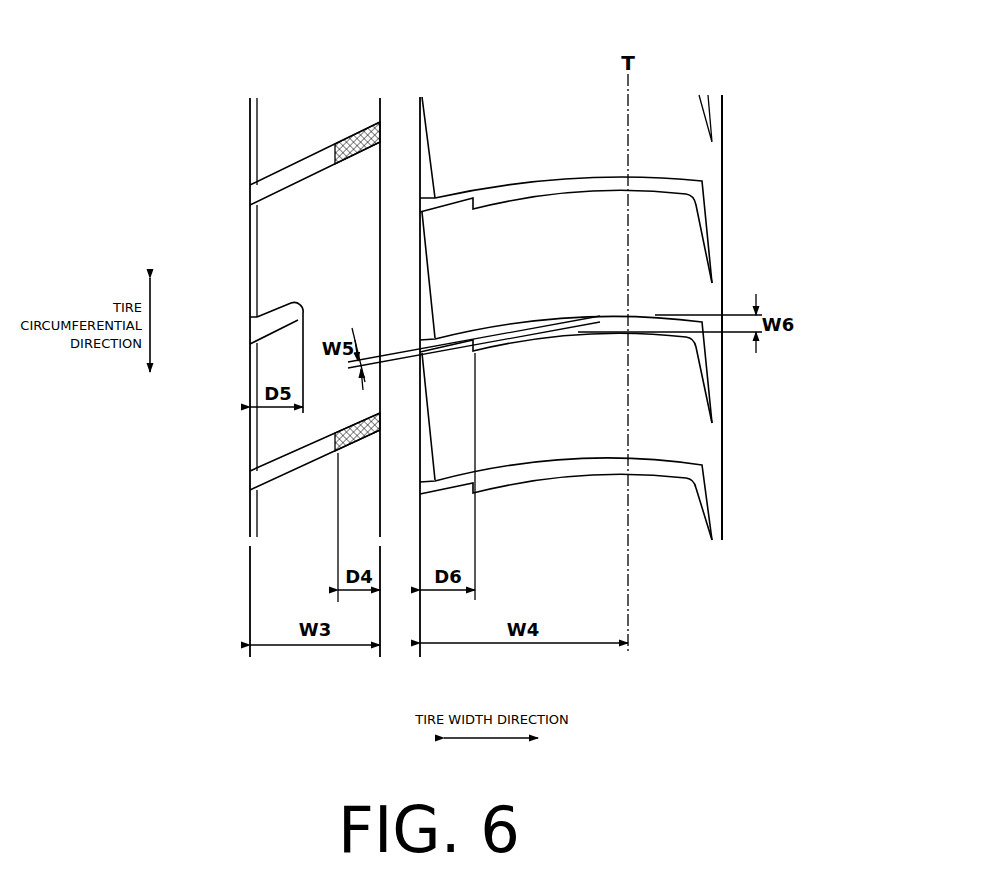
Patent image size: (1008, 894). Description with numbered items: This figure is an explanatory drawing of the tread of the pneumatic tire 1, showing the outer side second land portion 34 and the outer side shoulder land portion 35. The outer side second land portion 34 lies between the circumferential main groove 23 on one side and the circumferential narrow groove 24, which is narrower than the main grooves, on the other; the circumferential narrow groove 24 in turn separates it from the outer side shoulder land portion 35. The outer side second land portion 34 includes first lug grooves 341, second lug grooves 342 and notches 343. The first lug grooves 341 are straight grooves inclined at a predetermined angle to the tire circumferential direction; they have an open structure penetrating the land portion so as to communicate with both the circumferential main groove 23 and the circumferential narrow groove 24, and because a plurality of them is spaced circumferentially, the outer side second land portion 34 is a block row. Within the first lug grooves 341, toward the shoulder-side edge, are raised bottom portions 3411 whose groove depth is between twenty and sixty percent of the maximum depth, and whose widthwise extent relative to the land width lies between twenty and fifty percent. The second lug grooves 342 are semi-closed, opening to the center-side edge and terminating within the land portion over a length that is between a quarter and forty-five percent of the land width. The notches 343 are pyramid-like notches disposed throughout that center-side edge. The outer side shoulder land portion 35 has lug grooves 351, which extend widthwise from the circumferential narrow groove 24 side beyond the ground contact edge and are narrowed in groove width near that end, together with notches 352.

The pneumatic tire 1 is at (721, 43).
The circumferential main groove 23 is at (205, 115).
The circumferential narrow groove 24 is at (398, 115).
The outer side second land portion 34 is at (320, 88).
The outer side shoulder land portion 35 is at (556, 82).
The first lug groove 341 is at (302, 172).
The second lug groove 342 is at (290, 303).
The notch 343 is at (256, 143).
The lug groove 351 is at (563, 177).
The notch 352 is at (435, 172).
The raised bottom portion 3411 is at (345, 157).